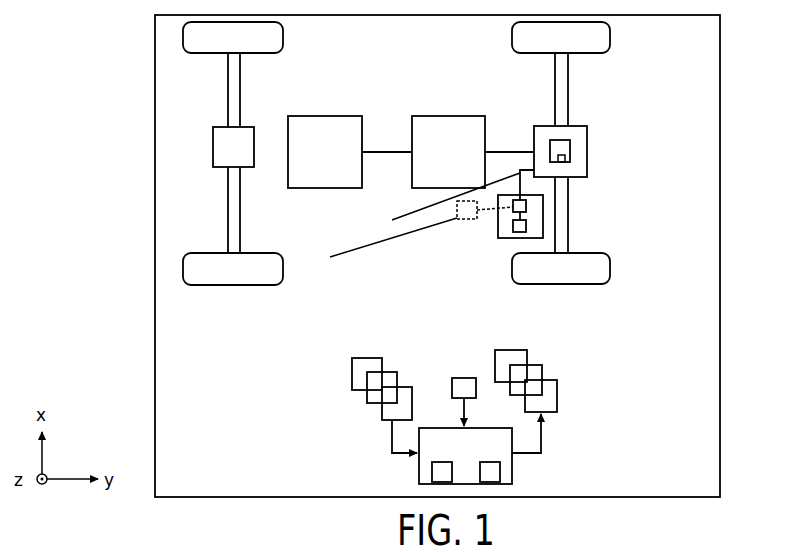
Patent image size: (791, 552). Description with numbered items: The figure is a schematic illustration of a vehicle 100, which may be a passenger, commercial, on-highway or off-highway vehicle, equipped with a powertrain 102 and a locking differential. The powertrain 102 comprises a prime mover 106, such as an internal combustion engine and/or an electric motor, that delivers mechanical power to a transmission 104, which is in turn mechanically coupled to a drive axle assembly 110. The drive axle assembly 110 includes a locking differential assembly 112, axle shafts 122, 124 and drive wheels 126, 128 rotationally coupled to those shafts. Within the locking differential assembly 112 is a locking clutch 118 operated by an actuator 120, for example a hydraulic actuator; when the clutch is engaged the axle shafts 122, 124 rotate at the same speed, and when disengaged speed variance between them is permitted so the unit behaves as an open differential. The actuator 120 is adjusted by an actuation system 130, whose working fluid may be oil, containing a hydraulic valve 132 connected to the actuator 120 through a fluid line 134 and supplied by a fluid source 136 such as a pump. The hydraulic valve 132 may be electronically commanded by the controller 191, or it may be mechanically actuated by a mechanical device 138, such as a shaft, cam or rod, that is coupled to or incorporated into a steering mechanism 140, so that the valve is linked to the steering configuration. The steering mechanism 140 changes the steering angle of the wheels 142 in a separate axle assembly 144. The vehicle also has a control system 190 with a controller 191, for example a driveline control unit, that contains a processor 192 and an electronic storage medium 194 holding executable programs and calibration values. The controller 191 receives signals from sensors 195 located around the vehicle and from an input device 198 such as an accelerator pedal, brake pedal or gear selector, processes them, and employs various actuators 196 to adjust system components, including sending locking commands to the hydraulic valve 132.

The vehicle 100 is at (155, 56).
The powertrain 102 is at (333, 62).
The transmission 104 is at (418, 116).
The prime mover 106 is at (297, 116).
The drive axle assembly 110 is at (514, 112).
The locking differential assembly 112 is at (587, 148).
The locking clutch 118 is at (570, 140).
The actuator 120 is at (565, 161).
The axle shaft 122 is at (568, 231).
The axle shaft 124 is at (568, 68).
The drive wheel 126 is at (610, 263).
The drive wheel 128 is at (610, 36).
The actuation system 130 is at (463, 256).
The hydraulic valve 132 is at (526, 206).
The fluid line 134 is at (437, 204).
The fluid source 136 is at (513, 232).
The mechanical device 138 is at (492, 213).
The steering mechanism 140 is at (373, 245).
The wheels 142 is at (247, 286).
The axle assembly 144 is at (242, 178).
The control system 190 is at (620, 369).
The controller 191 is at (480, 456).
The processor 192 is at (432, 472).
The electronic storage medium 194 is at (500, 472).
The sensors 195 is at (426, 358).
The actuators 196 is at (565, 349).
The input device 198 is at (463, 378).